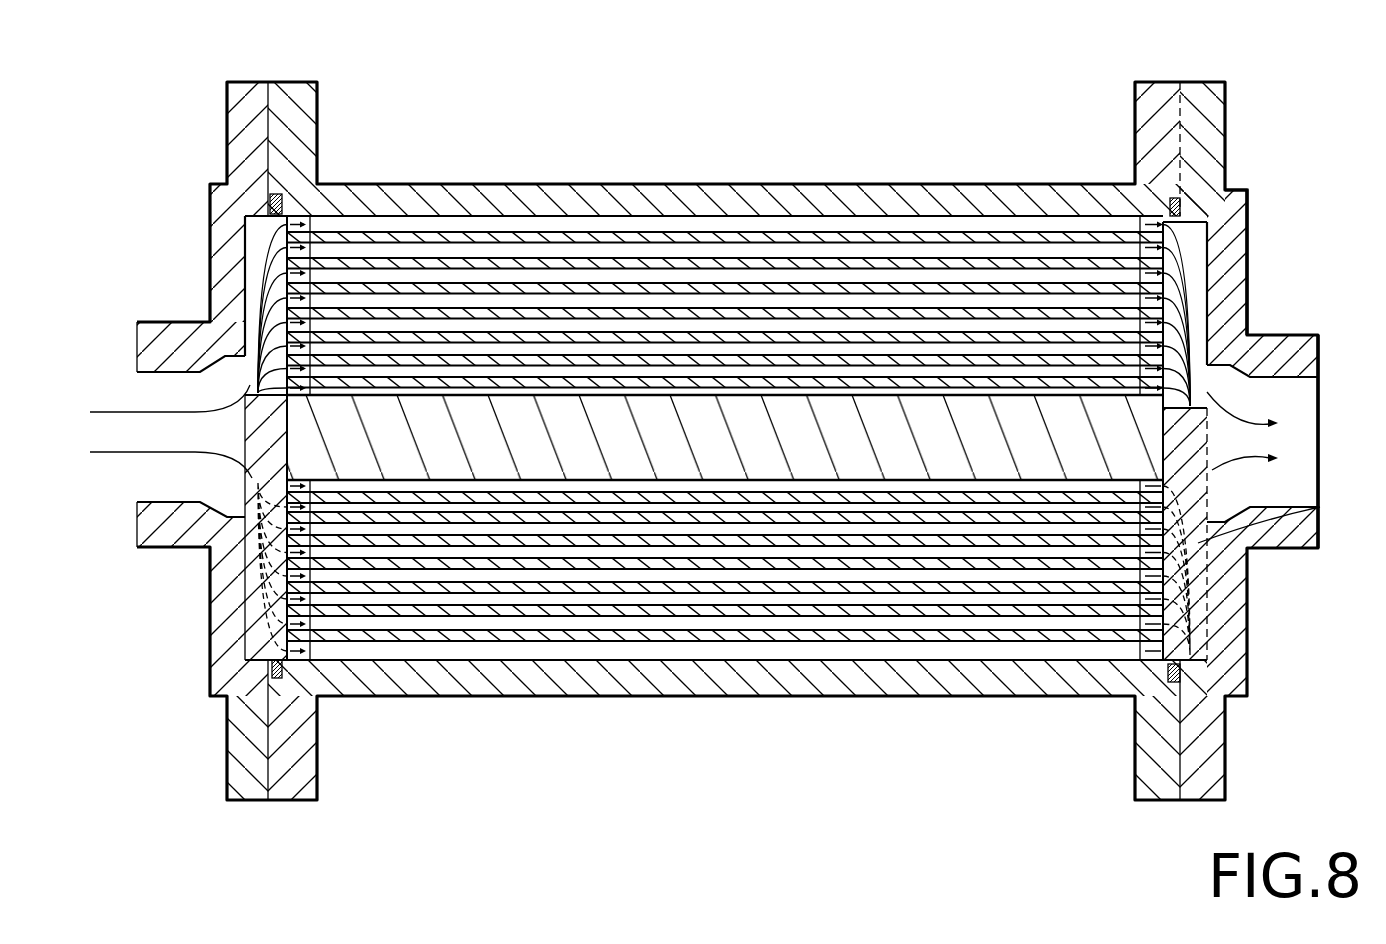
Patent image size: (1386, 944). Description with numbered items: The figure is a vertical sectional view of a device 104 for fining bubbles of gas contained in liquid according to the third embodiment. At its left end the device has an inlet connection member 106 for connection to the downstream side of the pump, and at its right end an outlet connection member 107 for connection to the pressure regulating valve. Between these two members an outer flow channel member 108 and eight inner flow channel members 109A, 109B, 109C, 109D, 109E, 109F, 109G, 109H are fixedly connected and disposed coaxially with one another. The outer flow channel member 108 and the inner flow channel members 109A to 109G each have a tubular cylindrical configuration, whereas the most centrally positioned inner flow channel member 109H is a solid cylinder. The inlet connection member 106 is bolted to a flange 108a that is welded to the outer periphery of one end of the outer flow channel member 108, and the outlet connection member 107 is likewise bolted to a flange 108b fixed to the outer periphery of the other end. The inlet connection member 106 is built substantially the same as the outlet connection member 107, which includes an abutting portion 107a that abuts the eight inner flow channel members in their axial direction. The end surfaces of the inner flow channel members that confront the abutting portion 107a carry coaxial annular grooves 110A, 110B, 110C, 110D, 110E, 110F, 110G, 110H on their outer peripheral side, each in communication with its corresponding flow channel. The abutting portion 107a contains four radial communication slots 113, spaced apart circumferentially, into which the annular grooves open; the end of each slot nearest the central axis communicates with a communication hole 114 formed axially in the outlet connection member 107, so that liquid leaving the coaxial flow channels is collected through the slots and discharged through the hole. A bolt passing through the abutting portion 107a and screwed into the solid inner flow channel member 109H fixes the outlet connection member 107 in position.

The device for fining bubbles 104 is at (993, 112).
The inlet connection member 106 is at (178, 325).
The outlet connection member 107 is at (1235, 263).
The abutting portion 107a is at (1318, 507).
The outer flow channel member 108 is at (378, 197).
The flange 108a is at (305, 780).
The flange 108b is at (1157, 795).
The inner flow channel member 109A is at (470, 240).
The inner flow channel member 109B is at (560, 258).
The inner flow channel member 109C is at (640, 290).
The inner flow channel member 109D is at (705, 308).
The inner flow channel member 109E is at (795, 334).
The inner flow channel member 109F is at (890, 358).
The inner flow channel member 109G is at (948, 380).
The inner flow channel member 109H is at (1045, 428).
The annular groove 110A is at (1175, 668).
The annular groove 110B is at (1168, 650).
The annular groove 110C is at (1160, 625).
The annular groove 110D is at (1150, 600).
The annular groove 110E is at (1138, 564).
The annular groove 110F is at (1138, 541).
The annular groove 110G is at (1138, 518).
The annular groove 110H is at (1138, 497).
The communication slot 113 is at (1247, 188).
The communication hole 114 is at (160, 468).